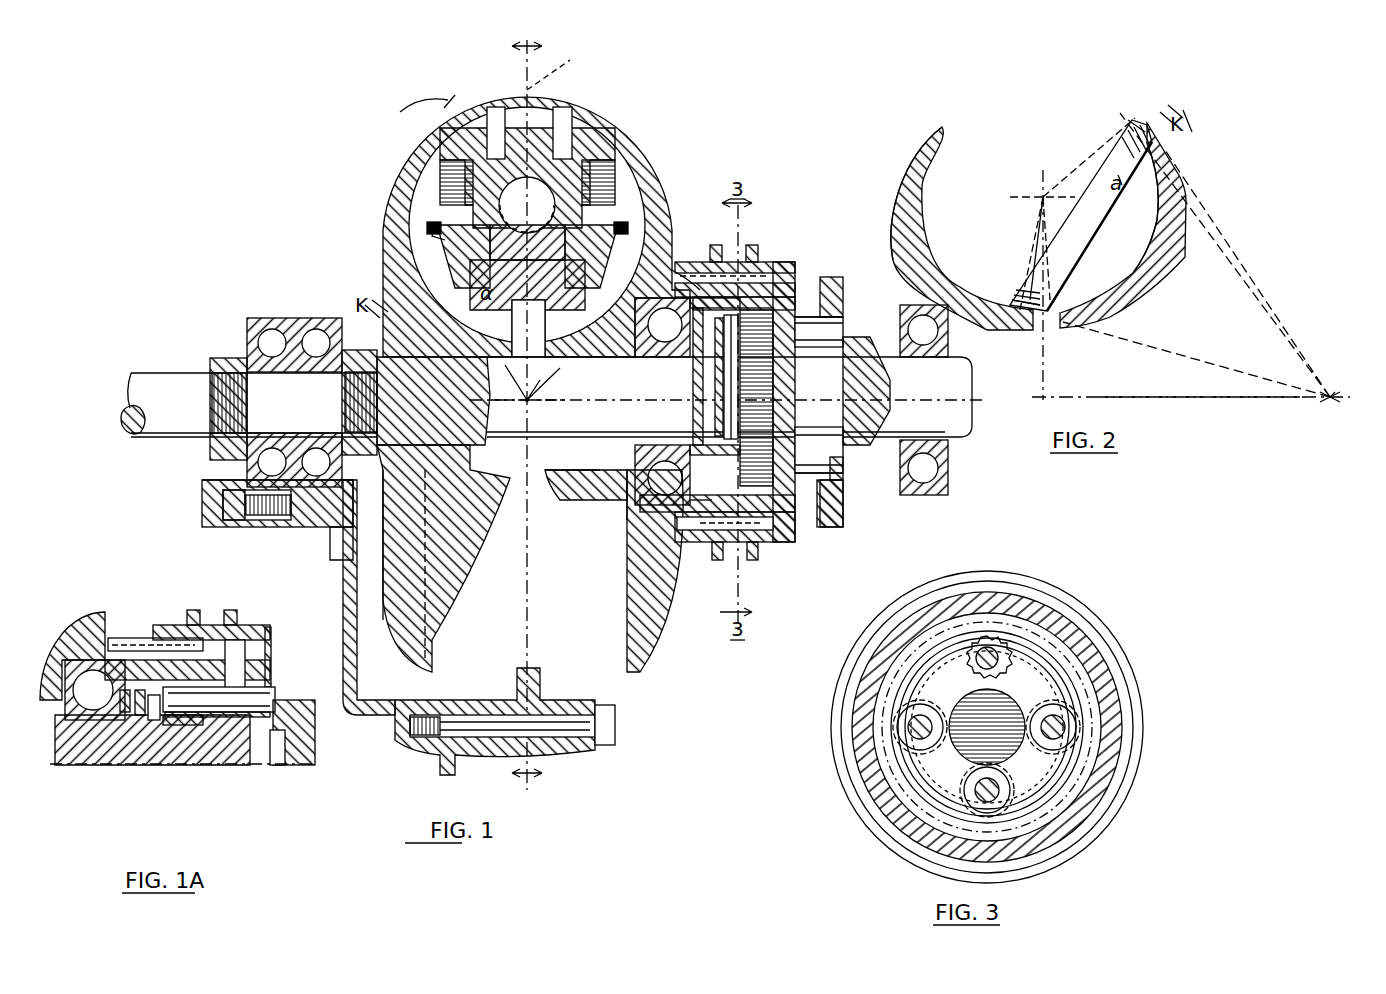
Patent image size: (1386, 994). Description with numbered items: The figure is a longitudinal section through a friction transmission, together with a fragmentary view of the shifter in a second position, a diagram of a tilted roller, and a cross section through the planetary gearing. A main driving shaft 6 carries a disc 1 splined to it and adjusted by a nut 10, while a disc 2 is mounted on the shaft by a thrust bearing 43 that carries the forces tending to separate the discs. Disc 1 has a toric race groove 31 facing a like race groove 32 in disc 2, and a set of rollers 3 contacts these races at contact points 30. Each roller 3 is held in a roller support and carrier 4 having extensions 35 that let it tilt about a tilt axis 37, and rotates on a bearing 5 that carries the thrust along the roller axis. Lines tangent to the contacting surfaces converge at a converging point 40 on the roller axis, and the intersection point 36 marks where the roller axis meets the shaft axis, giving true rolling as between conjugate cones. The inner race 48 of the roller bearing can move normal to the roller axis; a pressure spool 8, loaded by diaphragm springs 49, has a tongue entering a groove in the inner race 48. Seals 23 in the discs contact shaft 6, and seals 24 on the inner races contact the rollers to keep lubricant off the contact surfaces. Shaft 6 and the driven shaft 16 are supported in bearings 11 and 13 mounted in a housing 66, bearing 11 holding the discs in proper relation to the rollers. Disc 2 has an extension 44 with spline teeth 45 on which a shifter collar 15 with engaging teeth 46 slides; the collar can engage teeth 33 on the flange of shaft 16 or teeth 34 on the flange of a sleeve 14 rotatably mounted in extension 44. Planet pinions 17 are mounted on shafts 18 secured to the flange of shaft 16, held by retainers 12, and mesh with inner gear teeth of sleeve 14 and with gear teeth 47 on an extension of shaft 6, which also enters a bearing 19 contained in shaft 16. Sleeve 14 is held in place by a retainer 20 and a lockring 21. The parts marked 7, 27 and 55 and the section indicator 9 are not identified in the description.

In FIG. 1, the disc 1 is at (386, 625).
In FIG. 2, the disc 1 is at (905, 168).
In FIG. 1, the disc 2 is at (652, 650).
In FIG. 1A, the disc 2 is at (82, 625).
In FIG. 2, the disc 2 is at (1185, 240).
In FIG. 1, the rollers 3 is at (600, 270).
In FIG. 2, the rollers 3 is at (1020, 300).
In FIG. 1, the roller support and carrier 4 is at (505, 86).
In FIG. 1, the bearing 5 is at (527, 232).
In FIG. 1, the main driving shaft 6 is at (185, 432).
In FIG. 1A, the main driving shaft 6 is at (62, 765).
In FIG. 2, the main driving shaft 6 is at (1220, 398).
In FIG. 3, the main driving shaft 6 is at (960, 752).
In FIG. 1, the nut 7 is at (220, 450).
In FIG. 1, the pressure spool 8 is at (530, 118).
In FIG. 1, the section line 9- 9 is at (535, 41).
In FIG. 1, the nut 10 is at (343, 540).
In FIG. 1, the bearing 11 is at (282, 527).
In FIG. 1, the retainers 12 is at (728, 348).
In FIG. 1A, the retainers 12 is at (154, 720).
In FIG. 1, the bearing 13 is at (925, 495).
In FIG. 1, the sleeve 14 is at (795, 285).
In FIG. 1A, the sleeve 14 is at (236, 640).
In FIG. 3, the sleeve 14 is at (1070, 660).
In FIG. 1, the shifter collar 15 is at (752, 245).
In FIG. 1A, the shifter collar 15 is at (193, 610).
In FIG. 3, the shifter collar 15 is at (955, 582).
In FIG. 1, the driven shaft 16 is at (855, 340).
In FIG. 1A, the driven shaft 16 is at (292, 700).
In FIG. 3, the driven shaft 16 is at (1060, 690).
In FIG. 1, the planet pinions 17 is at (792, 500).
In FIG. 1A, the planet pinions 17 is at (205, 717).
In FIG. 3, the planet pinions 17 is at (1003, 666).
In FIG. 1, the shafts 18 is at (840, 332).
In FIG. 1A, the shafts 18 is at (232, 712).
In FIG. 3, the shafts 18 is at (970, 665).
In FIG. 1, the bearing 19 is at (843, 462).
In FIG. 1A, the bearing 19 is at (276, 765).
In FIG. 1, the retainer 20 is at (690, 340).
In FIG. 1A, the retainer 20 is at (125, 712).
In FIG. 1, the lockring 21 is at (705, 360).
In FIG. 1A, the lockring 21 is at (140, 715).
In FIG. 1, the seals 23 is at (520, 475).
In FIG. 1, the seals 24 is at (436, 232).
In FIG. 1, the bolt 27 is at (545, 745).
In FIG. 1, the contact points 30 is at (640, 285).
In FIG. 2, the contact points 30 is at (1130, 128).
In FIG. 1, the race groove 31 is at (445, 515).
In FIG. 2, the race groove 31 is at (925, 170).
In FIG. 1, the race groove 32 is at (600, 500).
In FIG. 2, the race groove 32 is at (1152, 240).
In FIG. 1, the teeth 33 is at (835, 278).
In FIG. 1A, the teeth 33 is at (270, 628).
In FIG. 1, the teeth 34 is at (785, 545).
In FIG. 1, the extensions 35 is at (556, 60).
In FIG. 1, the intersection point 36 is at (540, 382).
In FIG. 2, the intersection point 36 is at (1333, 394).
In FIG. 1, the tilt axis 37 is at (470, 120).
In FIG. 2, the tilt axis 37 is at (1040, 192).
In FIG. 1, the converging point 40 is at (528, 401).
In FIG. 2, the converging point 40 is at (1191, 271).
In FIG. 1, the thrust bearing 43 is at (628, 505).
In FIG. 1A, the thrust bearing 43 is at (105, 722).
In FIG. 1, the extension 44 is at (716, 560).
In FIG. 1A, the extension 44 is at (118, 650).
In FIG. 3, the extension 44 is at (1060, 640).
In FIG. 1, the spline teeth 45 is at (690, 545).
In FIG. 1A, the spline teeth 45 is at (140, 638).
In FIG. 3, the spline teeth 45 is at (1040, 602).
In FIG. 1, the engaging teeth 46 is at (760, 560).
In FIG. 1A, the engaging teeth 46 is at (165, 625).
In FIG. 3, the engaging teeth 46 is at (1003, 605).
In FIG. 1, the gear teeth 47 is at (843, 485).
In FIG. 1A, the gear teeth 47 is at (183, 725).
In FIG. 1, the inner race 48 is at (545, 285).
In FIG. 1, the diaphragm springs 49 is at (440, 175).
In FIG. 1, the bolt 55 is at (562, 108).
In FIG. 1, the housing 66 is at (385, 720).